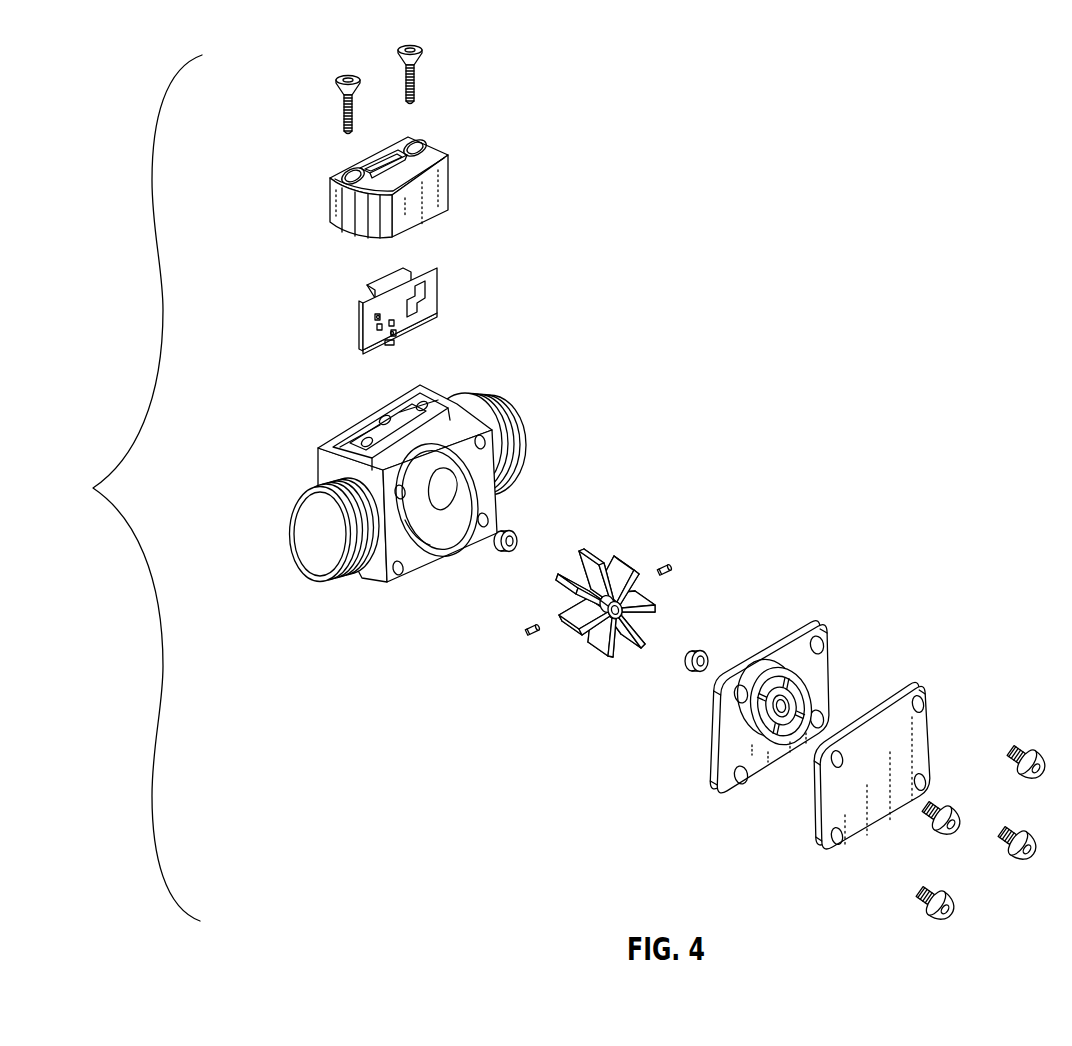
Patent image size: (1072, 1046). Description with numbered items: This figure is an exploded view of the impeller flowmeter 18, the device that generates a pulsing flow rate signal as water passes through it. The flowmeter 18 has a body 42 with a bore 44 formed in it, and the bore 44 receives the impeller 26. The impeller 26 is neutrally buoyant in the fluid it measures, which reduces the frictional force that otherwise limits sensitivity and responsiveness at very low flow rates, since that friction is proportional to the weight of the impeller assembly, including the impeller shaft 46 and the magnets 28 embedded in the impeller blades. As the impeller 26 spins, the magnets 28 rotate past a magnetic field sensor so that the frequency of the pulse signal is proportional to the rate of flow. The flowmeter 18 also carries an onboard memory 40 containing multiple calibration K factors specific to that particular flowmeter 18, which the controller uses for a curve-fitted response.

The impeller flowmeter 18 is at (742, 126).
The impeller 26 is at (650, 597).
The magnets 28 is at (528, 622).
The onboard memory 40 is at (430, 298).
The body 42 is at (332, 450).
The bore 44 is at (412, 533).
The impeller shaft 46 is at (620, 628).